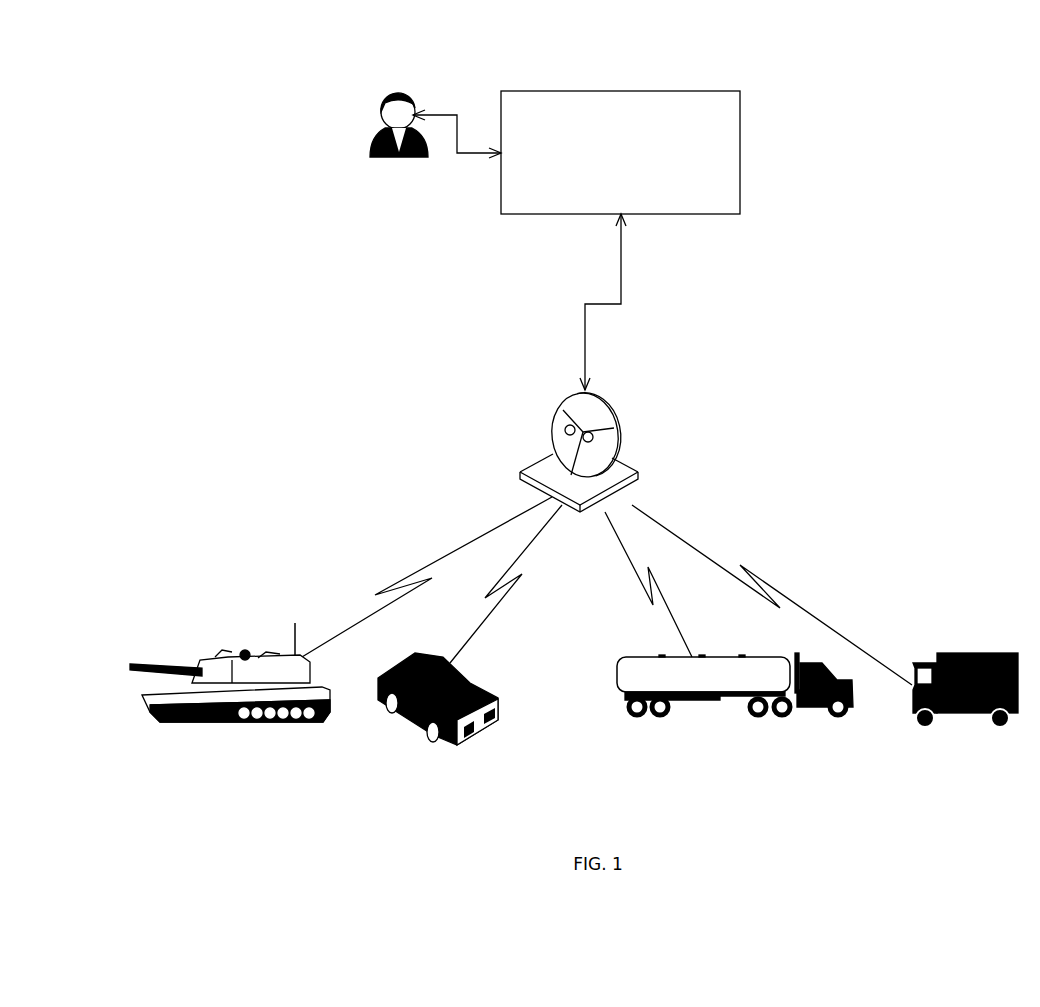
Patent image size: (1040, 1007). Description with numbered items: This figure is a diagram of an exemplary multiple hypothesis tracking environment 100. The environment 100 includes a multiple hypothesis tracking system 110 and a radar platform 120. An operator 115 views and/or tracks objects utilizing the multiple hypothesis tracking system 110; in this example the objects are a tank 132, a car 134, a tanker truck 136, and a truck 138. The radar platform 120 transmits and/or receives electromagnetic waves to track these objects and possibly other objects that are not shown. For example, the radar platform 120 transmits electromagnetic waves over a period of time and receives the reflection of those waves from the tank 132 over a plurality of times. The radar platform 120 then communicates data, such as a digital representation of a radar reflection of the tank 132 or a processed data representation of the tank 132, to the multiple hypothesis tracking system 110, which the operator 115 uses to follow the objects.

The multiple hypothesis tracking environment 100 is at (967, 37).
The multiple hypothesis tracking system 110 is at (620, 152).
The operator 115 is at (367, 168).
The radar platform 120 is at (617, 445).
The tank 132 is at (230, 715).
The car 134 is at (438, 735).
The tanker truck 136 is at (735, 730).
The truck 138 is at (964, 730).